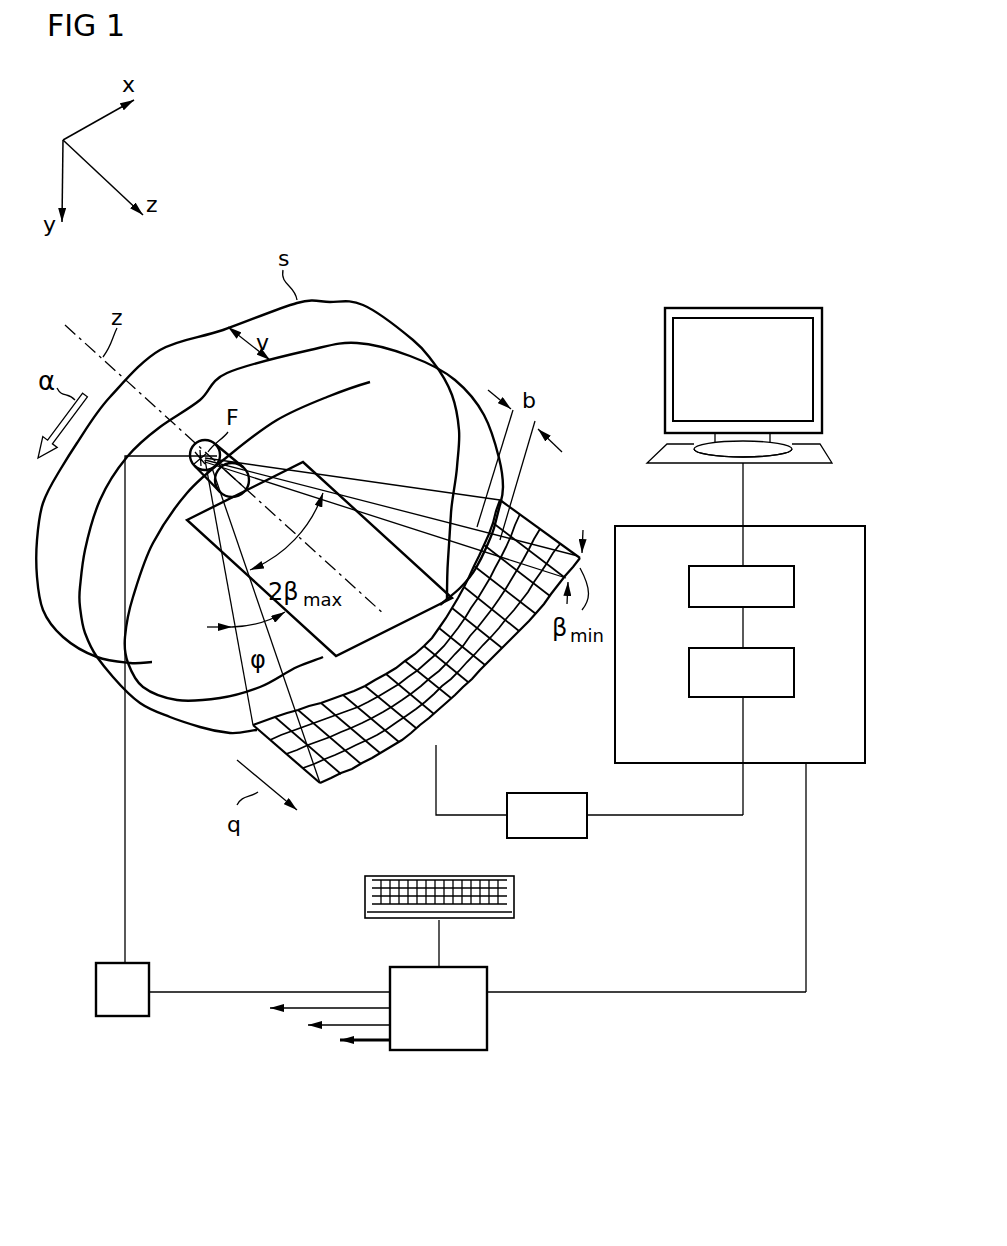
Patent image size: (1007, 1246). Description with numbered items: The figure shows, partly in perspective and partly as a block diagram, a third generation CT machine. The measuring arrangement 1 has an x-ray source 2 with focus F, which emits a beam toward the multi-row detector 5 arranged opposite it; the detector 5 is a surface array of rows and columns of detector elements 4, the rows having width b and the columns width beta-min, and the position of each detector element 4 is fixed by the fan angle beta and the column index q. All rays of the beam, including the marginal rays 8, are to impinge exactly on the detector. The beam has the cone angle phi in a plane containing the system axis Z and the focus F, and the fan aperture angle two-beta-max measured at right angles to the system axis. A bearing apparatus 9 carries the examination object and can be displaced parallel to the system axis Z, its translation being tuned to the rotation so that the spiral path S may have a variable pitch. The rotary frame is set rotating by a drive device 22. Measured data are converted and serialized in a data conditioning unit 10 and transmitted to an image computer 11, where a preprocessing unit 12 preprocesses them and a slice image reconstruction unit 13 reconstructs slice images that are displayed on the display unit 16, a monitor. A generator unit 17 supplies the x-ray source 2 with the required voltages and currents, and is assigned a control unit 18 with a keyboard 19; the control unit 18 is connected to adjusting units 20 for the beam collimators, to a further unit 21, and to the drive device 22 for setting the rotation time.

The measuring arrangement 1 is at (97, 732).
The x-ray source 2 is at (197, 456).
The detector element 4 is at (473, 688).
The multi-row detector 5 is at (396, 778).
The marginal rays 8 is at (237, 643).
The bearing apparatus 9 is at (198, 525).
The data conditioning unit 10 is at (553, 840).
The image computer 11 is at (840, 526).
The preprocessing unit 12 is at (689, 671).
The slice image reconstruction unit 13 is at (689, 586).
The display unit 16 is at (743, 307).
The generator unit 17 is at (118, 1017).
The control unit 18 is at (440, 1052).
The keyboard 19 is at (365, 893).
The adjusting units 20 is at (313, 1010).
The further unit 21 is at (337, 1028).
The drive device 22 is at (373, 1045).